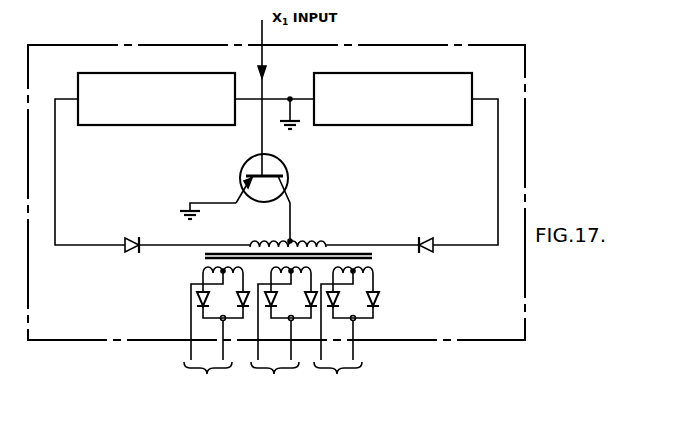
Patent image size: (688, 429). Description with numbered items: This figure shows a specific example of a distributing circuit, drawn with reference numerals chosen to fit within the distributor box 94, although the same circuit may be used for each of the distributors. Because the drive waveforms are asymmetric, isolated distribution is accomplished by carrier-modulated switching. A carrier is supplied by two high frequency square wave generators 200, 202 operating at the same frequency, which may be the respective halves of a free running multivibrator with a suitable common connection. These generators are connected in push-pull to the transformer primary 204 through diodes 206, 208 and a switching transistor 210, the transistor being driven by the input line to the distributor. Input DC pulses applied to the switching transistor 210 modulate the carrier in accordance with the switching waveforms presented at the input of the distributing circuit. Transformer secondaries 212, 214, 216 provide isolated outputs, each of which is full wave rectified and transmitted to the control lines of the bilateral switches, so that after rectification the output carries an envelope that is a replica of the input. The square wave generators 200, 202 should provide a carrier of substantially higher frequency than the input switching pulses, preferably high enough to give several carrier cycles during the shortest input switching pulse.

The distributor box 94 is at (496, 40).
The high frequency square wave generator 200 is at (127, 126).
The high frequency square wave generator 202 is at (431, 125).
The transformer primary 204 is at (308, 242).
The diode 206 is at (430, 241).
The diode 208 is at (131, 240).
The switching transistor 210 is at (288, 178).
The transformer secondary 212 is at (373, 271).
The transformer secondary 214 is at (280, 331).
The transformer secondary 216 is at (200, 271).